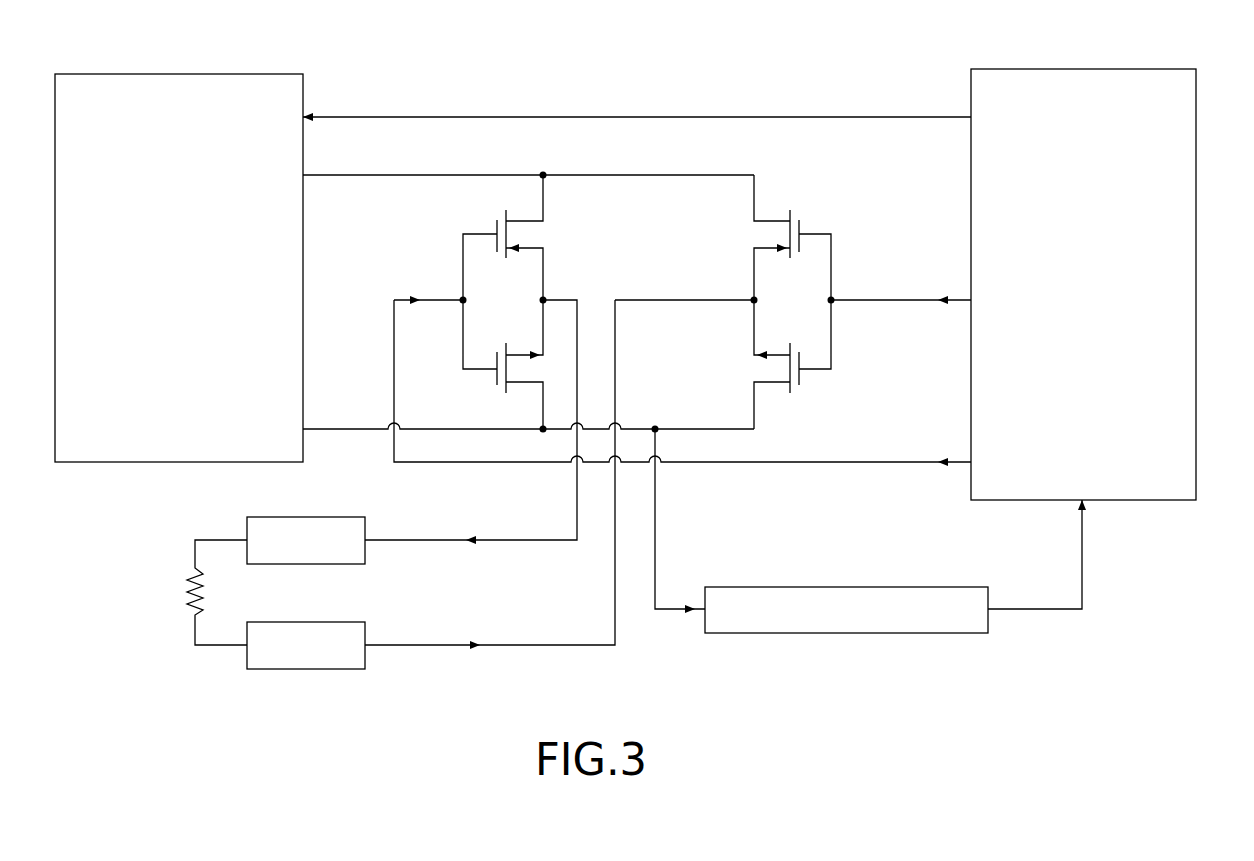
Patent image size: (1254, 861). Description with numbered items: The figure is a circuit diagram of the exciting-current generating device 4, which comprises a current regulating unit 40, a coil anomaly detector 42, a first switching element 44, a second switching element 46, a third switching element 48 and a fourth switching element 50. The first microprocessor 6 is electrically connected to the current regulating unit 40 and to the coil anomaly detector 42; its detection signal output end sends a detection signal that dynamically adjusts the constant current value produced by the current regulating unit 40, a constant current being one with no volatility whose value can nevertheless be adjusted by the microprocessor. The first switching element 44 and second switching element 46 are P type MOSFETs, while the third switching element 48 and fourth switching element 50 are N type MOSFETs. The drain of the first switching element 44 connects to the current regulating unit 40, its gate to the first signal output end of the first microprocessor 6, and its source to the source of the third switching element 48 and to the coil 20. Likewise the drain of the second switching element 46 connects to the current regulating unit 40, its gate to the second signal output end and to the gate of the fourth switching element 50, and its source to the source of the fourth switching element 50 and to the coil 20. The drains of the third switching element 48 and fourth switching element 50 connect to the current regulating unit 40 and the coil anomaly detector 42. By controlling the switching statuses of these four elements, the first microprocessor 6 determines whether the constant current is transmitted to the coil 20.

The exciting-current generating device 4 is at (708, 43).
The first microprocessor 6 is at (1181, 239).
The coil 20 is at (348, 532).
The current regulating unit 40 is at (185, 100).
The coil anomaly detector 42 is at (968, 625).
The first switching element 44 is at (486, 218).
The second switching element 46 is at (811, 213).
The third switching element 48 is at (499, 397).
The fourth switching element 50 is at (811, 383).